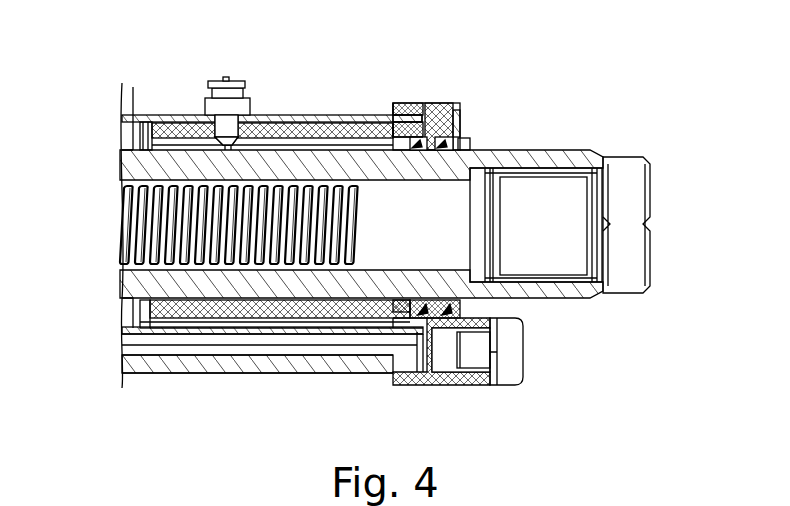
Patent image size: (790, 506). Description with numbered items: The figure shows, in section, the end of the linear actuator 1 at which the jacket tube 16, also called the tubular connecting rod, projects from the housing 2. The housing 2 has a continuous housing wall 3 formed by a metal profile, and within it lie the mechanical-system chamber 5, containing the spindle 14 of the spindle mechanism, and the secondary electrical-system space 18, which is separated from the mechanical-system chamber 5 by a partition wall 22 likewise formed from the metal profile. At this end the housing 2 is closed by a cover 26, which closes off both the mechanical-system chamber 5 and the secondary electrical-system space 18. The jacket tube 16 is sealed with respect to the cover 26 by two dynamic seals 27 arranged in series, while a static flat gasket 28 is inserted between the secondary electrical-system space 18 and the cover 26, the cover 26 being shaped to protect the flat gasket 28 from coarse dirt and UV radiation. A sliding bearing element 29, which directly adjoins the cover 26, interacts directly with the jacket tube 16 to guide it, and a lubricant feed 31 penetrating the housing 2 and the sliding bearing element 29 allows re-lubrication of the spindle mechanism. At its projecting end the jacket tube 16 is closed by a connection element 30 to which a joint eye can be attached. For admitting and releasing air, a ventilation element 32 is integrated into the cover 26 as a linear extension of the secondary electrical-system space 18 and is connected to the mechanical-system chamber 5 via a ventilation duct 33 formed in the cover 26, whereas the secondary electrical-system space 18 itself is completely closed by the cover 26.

The actuator 1 is at (604, 96).
The housing 2 is at (160, 367).
The housing wall 3 is at (310, 115).
The mechanical-system chamber 5 is at (134, 117).
The spindle 14 is at (145, 222).
The jacket tube 16 is at (142, 160).
The secondary electrical-system space 18 is at (140, 345).
The partition wall 22 is at (243, 333).
The cover 26 is at (437, 113).
The seals 27 is at (420, 110).
The flat gasket 28 is at (420, 342).
The sliding bearing element 29 is at (262, 303).
The connection element 30 is at (632, 253).
The lubricant feed 31 is at (237, 87).
The ventilation element 32 is at (513, 348).
The ventilation duct 33 is at (442, 350).